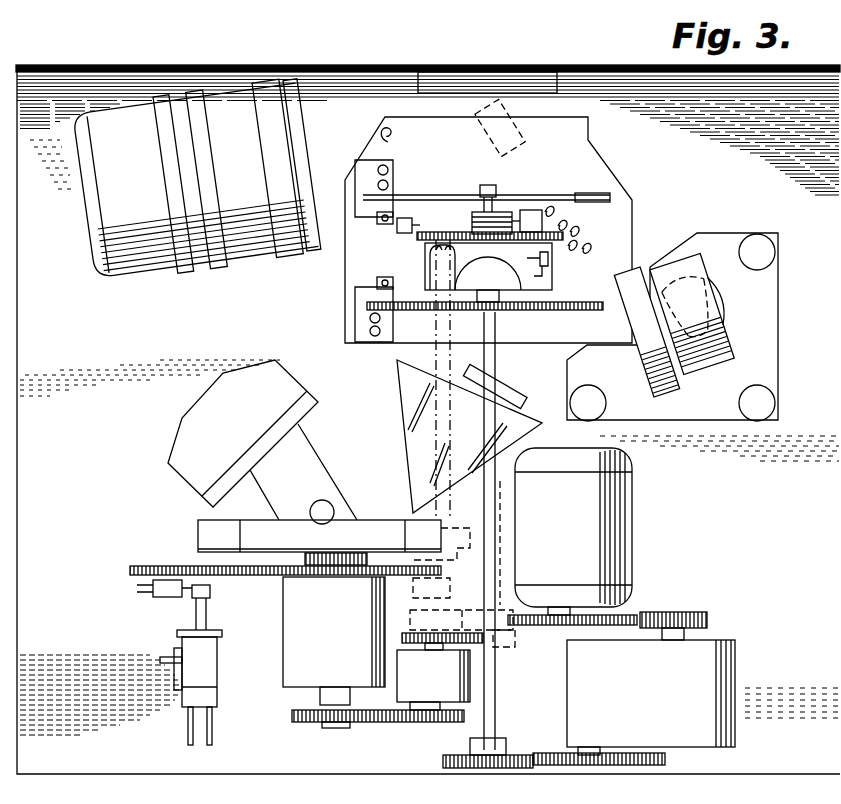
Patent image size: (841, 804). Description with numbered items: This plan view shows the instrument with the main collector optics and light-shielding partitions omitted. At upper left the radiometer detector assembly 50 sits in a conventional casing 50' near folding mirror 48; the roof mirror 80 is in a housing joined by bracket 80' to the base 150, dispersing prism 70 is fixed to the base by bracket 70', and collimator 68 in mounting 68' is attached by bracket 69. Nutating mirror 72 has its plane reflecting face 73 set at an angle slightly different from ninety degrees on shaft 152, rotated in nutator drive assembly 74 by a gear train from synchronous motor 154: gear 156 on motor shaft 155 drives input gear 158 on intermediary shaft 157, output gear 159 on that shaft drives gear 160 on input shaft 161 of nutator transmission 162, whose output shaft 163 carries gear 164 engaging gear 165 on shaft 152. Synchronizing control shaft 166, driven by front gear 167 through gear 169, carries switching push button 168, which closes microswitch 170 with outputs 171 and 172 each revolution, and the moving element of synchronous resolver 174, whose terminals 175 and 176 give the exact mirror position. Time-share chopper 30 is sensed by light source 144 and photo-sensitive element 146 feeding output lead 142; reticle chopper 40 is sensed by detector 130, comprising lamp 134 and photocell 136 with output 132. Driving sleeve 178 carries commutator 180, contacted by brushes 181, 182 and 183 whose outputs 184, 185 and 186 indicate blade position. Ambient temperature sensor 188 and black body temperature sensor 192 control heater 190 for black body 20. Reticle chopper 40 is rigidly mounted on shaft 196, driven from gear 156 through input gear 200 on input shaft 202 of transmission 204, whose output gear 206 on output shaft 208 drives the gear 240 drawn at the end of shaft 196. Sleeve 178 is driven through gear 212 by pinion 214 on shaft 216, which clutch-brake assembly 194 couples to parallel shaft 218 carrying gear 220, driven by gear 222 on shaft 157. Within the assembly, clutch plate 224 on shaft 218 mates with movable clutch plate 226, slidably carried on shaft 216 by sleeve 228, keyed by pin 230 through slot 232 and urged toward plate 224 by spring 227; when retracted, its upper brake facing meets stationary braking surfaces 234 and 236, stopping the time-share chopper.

The black body 20 is at (562, 248).
The time-share chopper 30 is at (463, 193).
The reticle chopper 40 is at (575, 310).
The folding mirror 48 is at (505, 103).
The radiometer detector assembly 50 is at (196, 212).
The casing 50' is at (237, 204).
The collimator 68 is at (674, 335).
The mounting 68' is at (744, 308).
The bracket 69 is at (720, 245).
The dispersing prism 70 is at (527, 436).
The bracket 70' is at (507, 386).
The nutating mirror 72 is at (238, 533).
The plane reflecting face 73 is at (245, 517).
The nutator drive assembly 74 is at (290, 682).
The roof mirror 80 is at (241, 442).
The bracket 80' is at (254, 443).
The detector 130 is at (345, 300).
The output 132 is at (348, 360).
The lamp 134 is at (372, 280).
The photocell 136 is at (386, 343).
The output lead 142 is at (393, 140).
The light source 144 is at (390, 212).
The photo-sensitive element 146 is at (393, 175).
The base 150 is at (108, 456).
The shaft 152 is at (332, 553).
The synchronous motor 154 is at (612, 488).
The motor shaft 155 is at (570, 612).
The gear 156 is at (637, 615).
The intermediary shaft 157 is at (520, 595).
The input gear 158 is at (380, 628).
The output gear 159 is at (508, 636).
The gear 160 is at (380, 640).
The input shaft 161 is at (443, 652).
The nutator transmission 162 is at (458, 692).
The output shaft 163 is at (412, 718).
The gear 164 is at (397, 722).
The gear 165 is at (303, 722).
The synchronizing control shaft 166 is at (223, 630).
The front gear 167 is at (208, 614).
The switching push button 168 is at (212, 594).
The gear 169 is at (150, 566).
The microswitch 170 is at (160, 604).
The output 171 is at (137, 582).
The output 172 is at (150, 588).
The synchronous resolver 174 is at (170, 668).
The resolver terminal 175 is at (188, 727).
The resolver terminal 176 is at (213, 727).
The driving sleeve 178 is at (499, 188).
The commutator 180 is at (500, 212).
The brush 181 is at (531, 210).
The brush 182 is at (472, 220).
The brush 183 is at (488, 234).
The output 184 is at (553, 212).
The output 185 is at (578, 228).
The output 186 is at (590, 246).
The ambient temperature sensor 188 is at (397, 232).
The heater 190 is at (430, 250).
The black body temperature sensor 192 is at (552, 282).
The clutch and brake assembly 194 is at (340, 490).
The shaft 196 is at (500, 352).
The input gear 200 is at (700, 608).
The input shaft 202 is at (680, 632).
The transmission 204 is at (725, 668).
The output gear 206 is at (637, 768).
The output shaft 208 is at (597, 747).
The gear 212 is at (527, 257).
The pinion 214 is at (417, 243).
The shaft 216 is at (420, 375).
The parallel shaft 218 is at (413, 580).
The gear 220 is at (410, 616).
The gear 222 is at (497, 548).
The clutch plate 224 is at (402, 527).
The movable clutch plate 226 is at (497, 512).
The spring 227 is at (432, 420).
The sleeve 228 is at (470, 455).
The pin 230 is at (440, 447).
The slot 232 is at (437, 472).
The stationary braking surface 234 is at (497, 481).
The stationary braking surface 236 is at (397, 517).
The bottom gear 240 is at (478, 770).